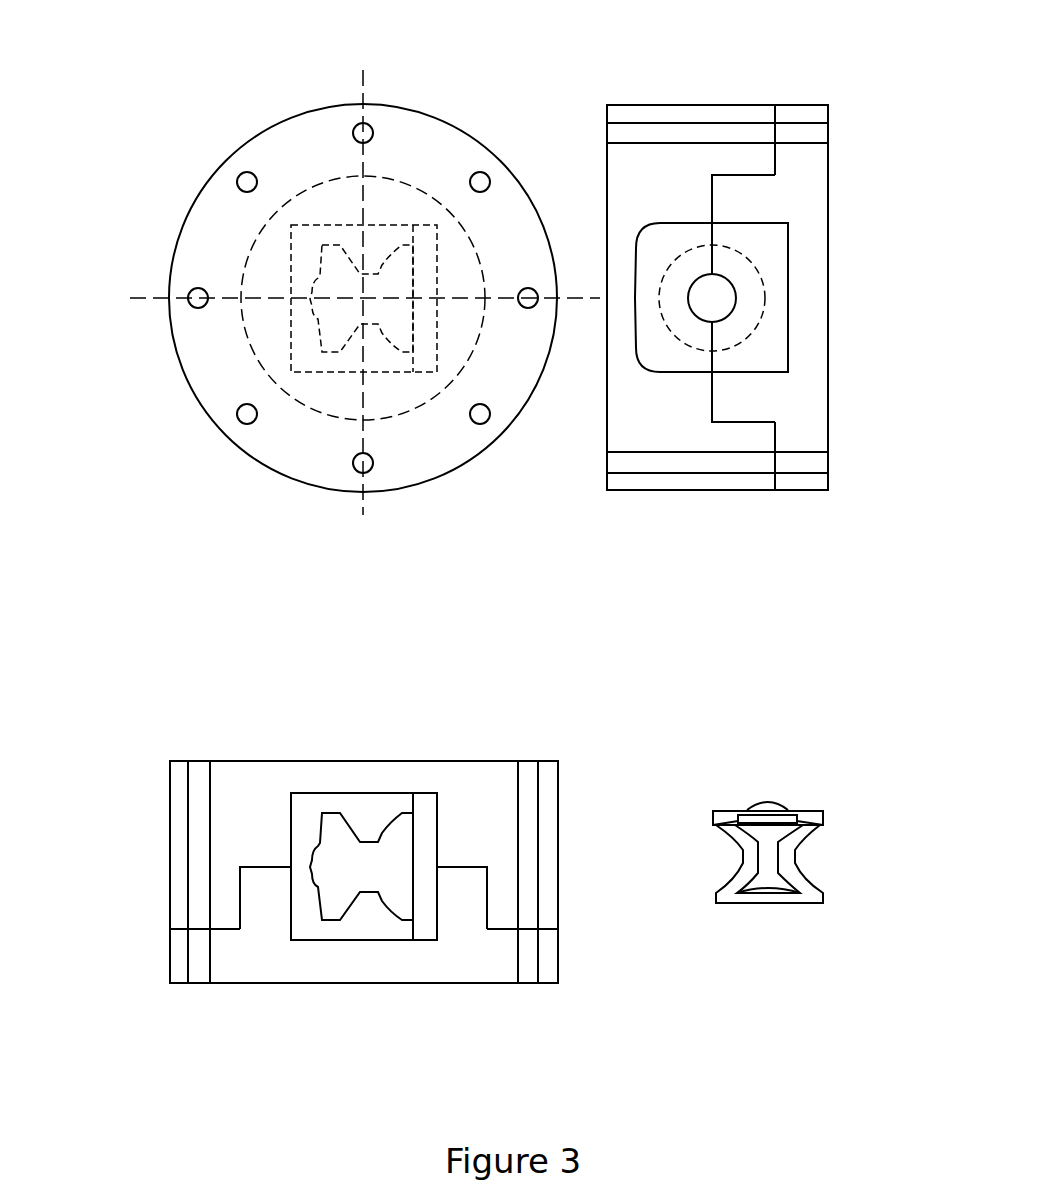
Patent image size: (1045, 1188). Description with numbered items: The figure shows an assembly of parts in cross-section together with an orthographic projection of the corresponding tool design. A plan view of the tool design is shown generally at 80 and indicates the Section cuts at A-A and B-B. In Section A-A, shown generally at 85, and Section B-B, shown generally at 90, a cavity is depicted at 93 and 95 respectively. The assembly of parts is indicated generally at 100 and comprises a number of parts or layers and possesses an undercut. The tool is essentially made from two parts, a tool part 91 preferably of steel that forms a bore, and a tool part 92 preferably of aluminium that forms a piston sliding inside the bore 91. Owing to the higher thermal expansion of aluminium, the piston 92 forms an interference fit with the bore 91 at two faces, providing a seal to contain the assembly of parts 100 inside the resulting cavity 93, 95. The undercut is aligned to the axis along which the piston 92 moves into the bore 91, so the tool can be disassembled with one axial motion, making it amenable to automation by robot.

The plan view of tool design 80 is at (230, 132).
The Section A-A 85 is at (789, 88).
The Section B-B 90 is at (150, 867).
The tool part forming a bore 91 is at (250, 815).
The tool part forming a piston 92 is at (302, 960).
The cavity 93 is at (712, 298).
The cavity 95 is at (363, 862).
The assembly of parts 100 is at (810, 795).